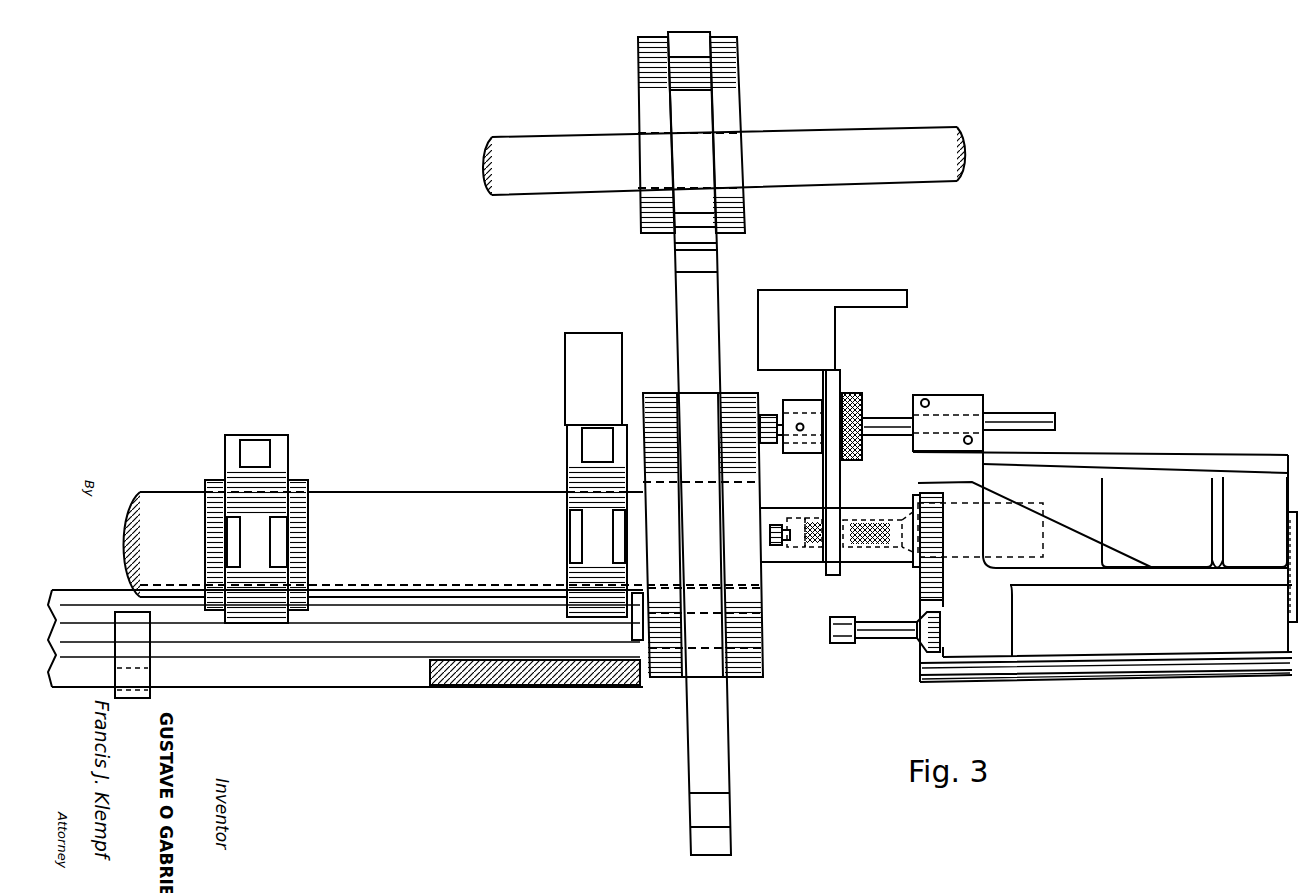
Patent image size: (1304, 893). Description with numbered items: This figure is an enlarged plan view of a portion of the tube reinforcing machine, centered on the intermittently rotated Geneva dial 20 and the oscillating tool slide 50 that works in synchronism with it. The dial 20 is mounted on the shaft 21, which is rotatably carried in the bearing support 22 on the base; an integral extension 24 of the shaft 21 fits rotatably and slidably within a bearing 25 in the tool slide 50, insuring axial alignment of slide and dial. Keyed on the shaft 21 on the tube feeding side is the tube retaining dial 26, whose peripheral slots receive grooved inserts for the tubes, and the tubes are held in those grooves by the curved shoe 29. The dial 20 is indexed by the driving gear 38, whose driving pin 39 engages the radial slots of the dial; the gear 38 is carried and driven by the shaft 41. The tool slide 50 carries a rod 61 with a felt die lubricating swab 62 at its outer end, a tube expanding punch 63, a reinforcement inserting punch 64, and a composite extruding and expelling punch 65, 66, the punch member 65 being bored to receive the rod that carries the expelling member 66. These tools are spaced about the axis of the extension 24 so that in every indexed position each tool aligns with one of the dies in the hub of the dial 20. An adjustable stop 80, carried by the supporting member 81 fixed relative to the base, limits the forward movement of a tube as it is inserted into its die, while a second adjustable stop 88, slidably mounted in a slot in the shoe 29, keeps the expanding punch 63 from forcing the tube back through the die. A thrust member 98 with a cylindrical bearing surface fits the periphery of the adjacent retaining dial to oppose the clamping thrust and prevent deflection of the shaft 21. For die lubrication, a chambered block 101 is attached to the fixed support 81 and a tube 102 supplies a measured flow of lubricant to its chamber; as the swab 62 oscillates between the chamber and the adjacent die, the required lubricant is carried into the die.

The Geneva dial 20 is at (703, 352).
The shaft 21 is at (432, 490).
The bearing support 22 is at (567, 470).
The integral extension 24 is at (878, 512).
The bearing 25 is at (905, 494).
The tube retaining dial 26 is at (284, 478).
The curved shoe 29 is at (417, 688).
The driving gear 38 is at (724, 75).
The driving pin 39 is at (694, 78).
The shaft 41 is at (874, 136).
The tool slide 50 is at (1158, 466).
The rod 61 is at (878, 420).
The die lubricating swab 62 is at (770, 414).
The tube expanding punch 63 is at (840, 643).
The reinforcement inserting punch 64 is at (885, 640).
The extruding punch member 65 is at (820, 548).
The expelling punch member 66 is at (798, 548).
The adjustable stop 80 is at (790, 524).
The supporting member 81 is at (830, 487).
The adjustable stop 88 is at (118, 626).
The thrust member 98 is at (596, 334).
The chambered block 101 is at (800, 405).
The tube 102 is at (802, 432).